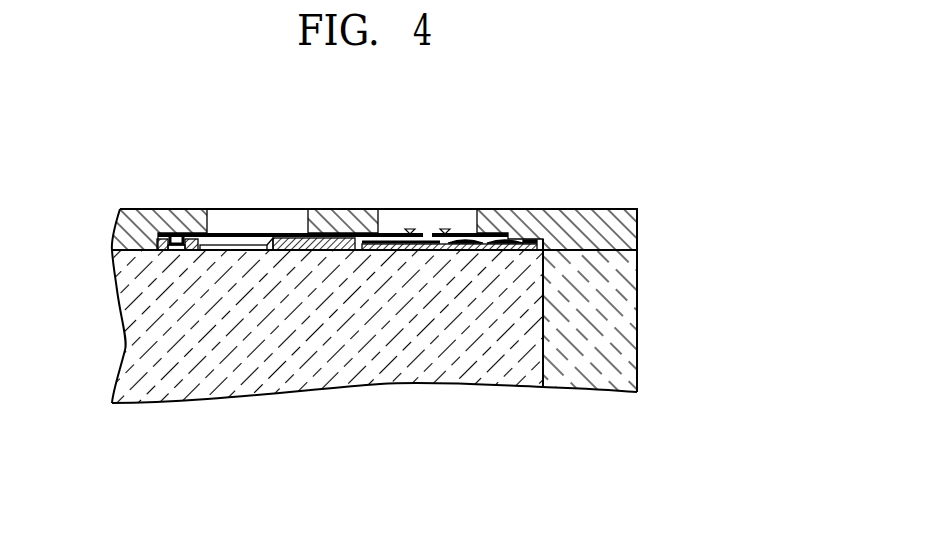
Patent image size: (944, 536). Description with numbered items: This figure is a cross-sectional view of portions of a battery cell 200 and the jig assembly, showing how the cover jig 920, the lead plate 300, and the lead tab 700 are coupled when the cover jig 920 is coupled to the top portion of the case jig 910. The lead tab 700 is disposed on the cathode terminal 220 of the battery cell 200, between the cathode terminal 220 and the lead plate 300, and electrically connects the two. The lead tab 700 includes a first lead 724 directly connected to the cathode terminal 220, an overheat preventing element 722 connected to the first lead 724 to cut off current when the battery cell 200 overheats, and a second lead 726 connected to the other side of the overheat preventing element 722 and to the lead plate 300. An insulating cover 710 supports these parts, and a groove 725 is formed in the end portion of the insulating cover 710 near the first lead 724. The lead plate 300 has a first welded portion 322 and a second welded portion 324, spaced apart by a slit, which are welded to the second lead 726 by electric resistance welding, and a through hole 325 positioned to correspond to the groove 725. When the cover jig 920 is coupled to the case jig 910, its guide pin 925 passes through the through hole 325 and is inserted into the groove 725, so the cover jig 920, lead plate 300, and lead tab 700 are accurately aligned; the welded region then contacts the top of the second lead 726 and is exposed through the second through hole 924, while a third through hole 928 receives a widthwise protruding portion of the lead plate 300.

The battery cell 200 is at (157, 378).
The cathode terminal 220 is at (250, 250).
The lead plate 300 is at (243, 221).
The first welded portion 322 is at (410, 229).
The second welded portion 324 is at (445, 229).
The through hole 325 is at (181, 240).
The lead tab 700 is at (403, 272).
The insulating cover 710 is at (390, 250).
The overheat preventing element 722 is at (320, 250).
The first lead 724 is at (227, 250).
The groove 725 is at (172, 233).
The second lead 726 is at (453, 250).
The case jig 910 is at (592, 383).
The cover jig 920 is at (580, 216).
The second through hole 924 is at (476, 230).
The guide pin 925 is at (172, 247).
The third through hole 928 is at (307, 231).